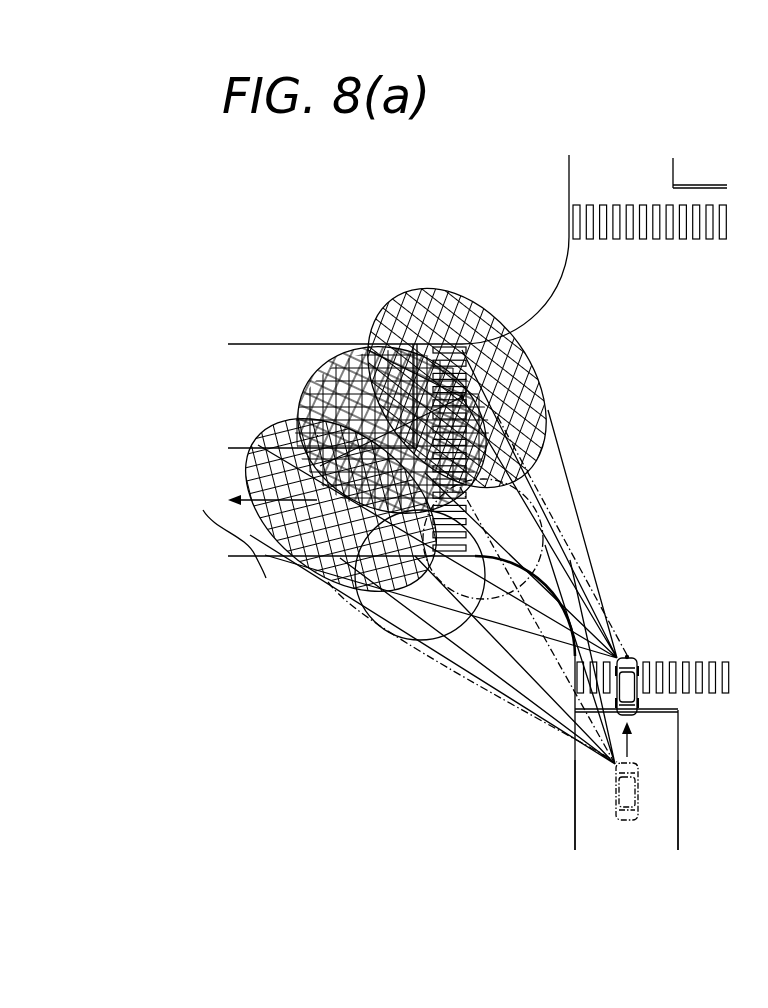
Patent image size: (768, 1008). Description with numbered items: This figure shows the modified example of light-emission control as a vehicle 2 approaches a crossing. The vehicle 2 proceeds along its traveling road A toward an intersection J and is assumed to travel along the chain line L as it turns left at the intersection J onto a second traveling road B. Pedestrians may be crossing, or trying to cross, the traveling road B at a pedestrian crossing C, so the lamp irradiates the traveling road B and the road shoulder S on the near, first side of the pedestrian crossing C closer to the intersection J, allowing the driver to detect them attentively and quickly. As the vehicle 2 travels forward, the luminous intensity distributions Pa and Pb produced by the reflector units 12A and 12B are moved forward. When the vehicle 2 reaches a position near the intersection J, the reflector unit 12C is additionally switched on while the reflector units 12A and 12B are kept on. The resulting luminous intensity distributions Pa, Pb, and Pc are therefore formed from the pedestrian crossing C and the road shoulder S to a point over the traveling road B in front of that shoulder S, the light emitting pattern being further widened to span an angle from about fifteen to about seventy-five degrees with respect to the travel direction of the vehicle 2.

The vehicle 2 is at (646, 674).
The reflector unit 12A is at (628, 655).
The reflector unit 12B is at (614, 766).
The reflector unit 12C is at (627, 657).
The traveling road A is at (653, 818).
The traveling road B is at (263, 445).
The pedestrian crossing C is at (466, 380).
The intersection J is at (689, 458).
The line L is at (583, 550).
The road shoulder S is at (255, 531).
The luminous intensity distribution Pa is at (430, 287).
The luminous intensity distribution Pb is at (367, 345).
The luminous intensity distribution Pc is at (300, 420).